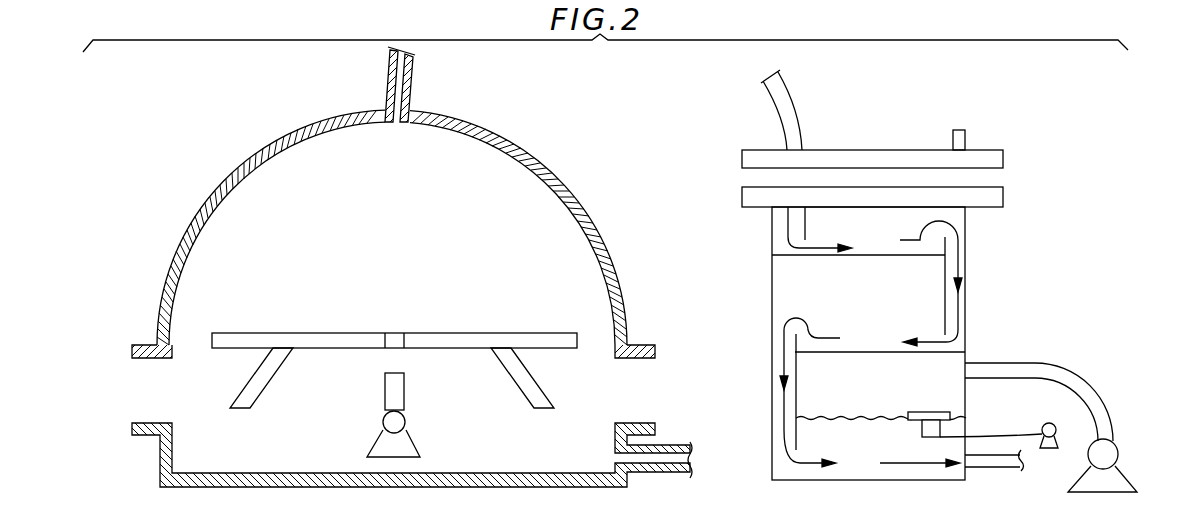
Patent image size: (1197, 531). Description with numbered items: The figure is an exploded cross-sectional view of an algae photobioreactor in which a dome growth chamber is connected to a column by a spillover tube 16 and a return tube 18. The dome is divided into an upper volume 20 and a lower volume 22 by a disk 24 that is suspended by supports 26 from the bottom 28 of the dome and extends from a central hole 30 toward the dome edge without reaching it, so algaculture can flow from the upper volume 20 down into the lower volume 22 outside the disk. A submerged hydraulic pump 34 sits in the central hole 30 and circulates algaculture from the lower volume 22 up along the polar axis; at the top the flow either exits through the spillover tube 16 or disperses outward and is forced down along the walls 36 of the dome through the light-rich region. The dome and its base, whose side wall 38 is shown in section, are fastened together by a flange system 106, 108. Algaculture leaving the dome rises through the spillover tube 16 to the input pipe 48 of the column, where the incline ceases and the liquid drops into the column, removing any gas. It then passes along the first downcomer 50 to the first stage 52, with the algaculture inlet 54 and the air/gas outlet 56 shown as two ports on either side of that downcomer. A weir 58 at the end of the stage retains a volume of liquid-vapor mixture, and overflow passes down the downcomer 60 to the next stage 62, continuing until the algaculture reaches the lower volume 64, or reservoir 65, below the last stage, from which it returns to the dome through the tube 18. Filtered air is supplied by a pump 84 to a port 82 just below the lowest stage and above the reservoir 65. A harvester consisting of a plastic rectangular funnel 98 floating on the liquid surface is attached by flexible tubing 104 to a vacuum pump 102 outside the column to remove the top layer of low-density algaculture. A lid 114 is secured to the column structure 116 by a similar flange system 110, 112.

The spillover tube 16 is at (413, 91).
The dome walls 36 is at (538, 157).
The upper volume 20 is at (405, 232).
The central hole 30 is at (398, 345).
The disk 24 is at (468, 333).
The flange system 106 is at (155, 345).
The supports 26 is at (248, 384).
The flange system 108 is at (150, 424).
The side wall 38 is at (160, 458).
The bottom of the dome 28 is at (215, 488).
The lower volume 22 is at (330, 444).
The submerged hydraulic pump 34 is at (406, 421).
The input pipe 48 is at (790, 97).
The algaculture inlet 54 is at (803, 148).
The first downcomer 50 is at (808, 218).
The air/gas outlet 56 is at (968, 140).
The lid 114 is at (757, 148).
The flange system 110 is at (742, 158).
The flange system 112 is at (742, 195).
The first stage 52 is at (883, 236).
The weir 58 is at (947, 245).
The next stage 62 is at (880, 304).
The downcomer 60 is at (965, 300).
The column structure 116 is at (770, 293).
The port 82 is at (968, 363).
The lower volume 64 is at (883, 389).
The flexible tubing 104 is at (993, 435).
The reservoir 65 is at (868, 451).
The pump 84 is at (1120, 472).
The plastic rectangular funnel 98 is at (922, 437).
The tube 18 is at (993, 472).
The vacuum pump 102 is at (1048, 450).